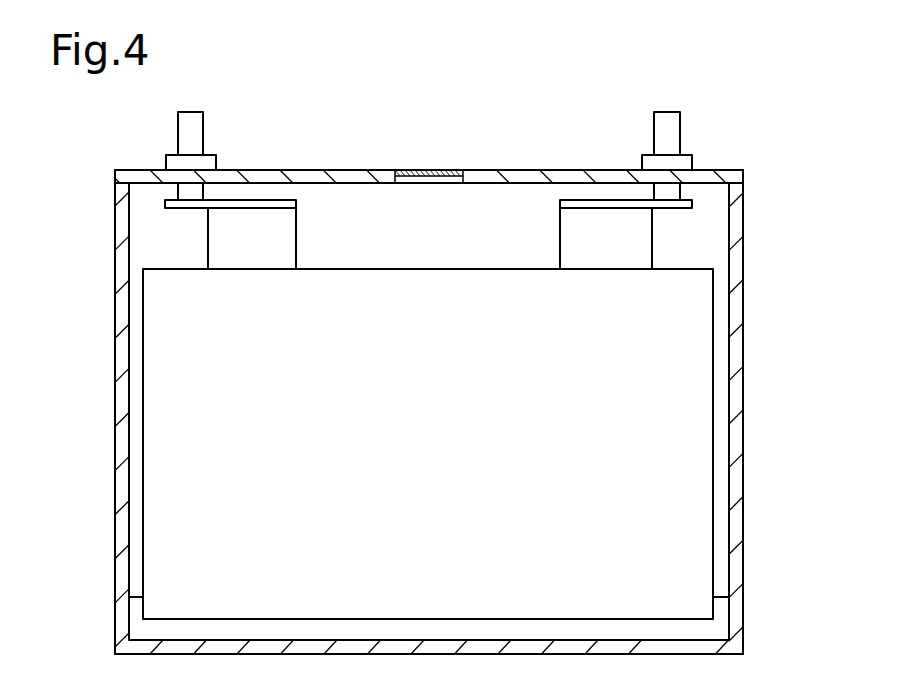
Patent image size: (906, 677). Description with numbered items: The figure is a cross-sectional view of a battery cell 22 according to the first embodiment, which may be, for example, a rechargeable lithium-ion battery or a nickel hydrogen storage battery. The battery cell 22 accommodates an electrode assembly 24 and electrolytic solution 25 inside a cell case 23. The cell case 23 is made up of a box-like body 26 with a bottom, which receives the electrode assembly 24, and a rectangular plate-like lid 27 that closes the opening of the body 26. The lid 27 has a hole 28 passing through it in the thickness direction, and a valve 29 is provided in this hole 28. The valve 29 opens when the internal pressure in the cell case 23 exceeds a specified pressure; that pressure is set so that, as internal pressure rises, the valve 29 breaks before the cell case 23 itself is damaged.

The battery cell 22 is at (60, 140).
The cell case 23 is at (62, 180).
The electrode assembly 24 is at (714, 398).
The electrolytic solution 25 is at (722, 613).
The body 26 is at (123, 230).
The lid 27 is at (118, 177).
The hole 28 is at (452, 184).
The valve 29 is at (438, 170).